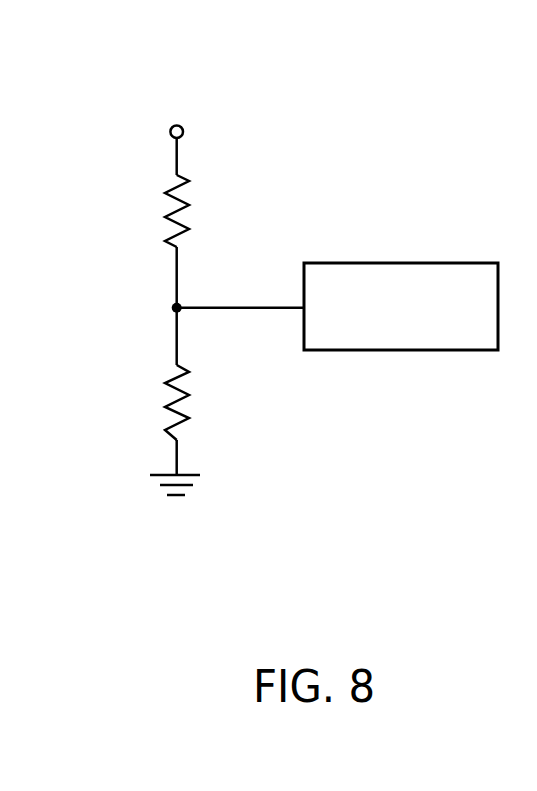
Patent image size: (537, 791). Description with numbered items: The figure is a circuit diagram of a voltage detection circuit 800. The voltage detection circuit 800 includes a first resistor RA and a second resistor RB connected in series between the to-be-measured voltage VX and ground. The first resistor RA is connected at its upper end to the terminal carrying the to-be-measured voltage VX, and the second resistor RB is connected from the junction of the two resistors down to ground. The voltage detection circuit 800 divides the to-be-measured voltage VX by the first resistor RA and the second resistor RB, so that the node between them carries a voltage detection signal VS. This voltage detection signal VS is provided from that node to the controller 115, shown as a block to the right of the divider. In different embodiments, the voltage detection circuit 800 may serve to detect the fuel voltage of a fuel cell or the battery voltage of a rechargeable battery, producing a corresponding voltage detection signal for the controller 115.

The controller 115 is at (304, 263).
The voltage detection circuit 800 is at (295, 314).
The first resistor RA is at (163, 222).
The second resistor RB is at (163, 411).